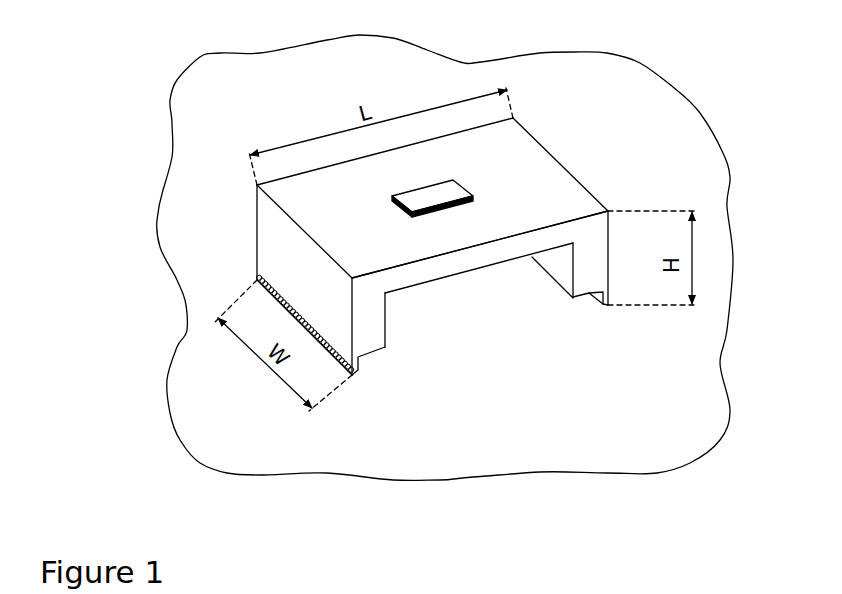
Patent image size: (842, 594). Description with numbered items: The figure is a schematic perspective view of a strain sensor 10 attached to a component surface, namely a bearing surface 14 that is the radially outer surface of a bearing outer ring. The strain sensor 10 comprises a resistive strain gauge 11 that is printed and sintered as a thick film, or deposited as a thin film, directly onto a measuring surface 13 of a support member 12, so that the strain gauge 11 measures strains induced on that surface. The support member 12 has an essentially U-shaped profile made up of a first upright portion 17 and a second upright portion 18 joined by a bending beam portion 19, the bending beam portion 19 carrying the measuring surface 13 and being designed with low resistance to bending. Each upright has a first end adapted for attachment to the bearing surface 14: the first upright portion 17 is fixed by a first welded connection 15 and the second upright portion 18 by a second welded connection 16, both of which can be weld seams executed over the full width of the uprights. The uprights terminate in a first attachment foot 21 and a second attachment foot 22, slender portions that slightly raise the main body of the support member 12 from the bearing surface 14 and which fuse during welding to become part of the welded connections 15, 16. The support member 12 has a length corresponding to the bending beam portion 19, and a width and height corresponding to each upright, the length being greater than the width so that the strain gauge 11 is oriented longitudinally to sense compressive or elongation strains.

The strain sensor 10 is at (267, 111).
The resistive strain gauge 11 is at (430, 196).
The support member 12 is at (563, 105).
The measuring surface 13 is at (552, 185).
The bearing surface 14 is at (443, 469).
The first welded connection 15 is at (257, 280).
The second welded connection 16 is at (610, 297).
The first upright portion 17 is at (365, 327).
The second upright portion 18 is at (597, 245).
The bending beam portion 19 is at (467, 259).
The first attachment foot 21 is at (350, 375).
The second attachment foot 22 is at (605, 306).